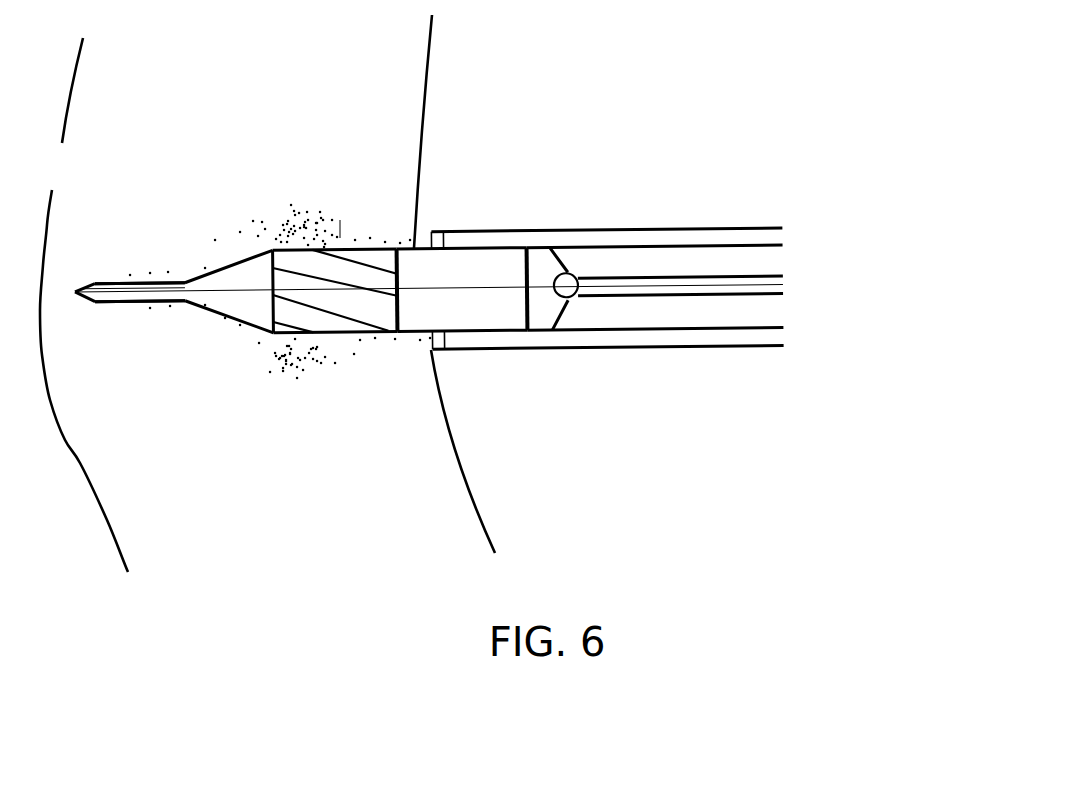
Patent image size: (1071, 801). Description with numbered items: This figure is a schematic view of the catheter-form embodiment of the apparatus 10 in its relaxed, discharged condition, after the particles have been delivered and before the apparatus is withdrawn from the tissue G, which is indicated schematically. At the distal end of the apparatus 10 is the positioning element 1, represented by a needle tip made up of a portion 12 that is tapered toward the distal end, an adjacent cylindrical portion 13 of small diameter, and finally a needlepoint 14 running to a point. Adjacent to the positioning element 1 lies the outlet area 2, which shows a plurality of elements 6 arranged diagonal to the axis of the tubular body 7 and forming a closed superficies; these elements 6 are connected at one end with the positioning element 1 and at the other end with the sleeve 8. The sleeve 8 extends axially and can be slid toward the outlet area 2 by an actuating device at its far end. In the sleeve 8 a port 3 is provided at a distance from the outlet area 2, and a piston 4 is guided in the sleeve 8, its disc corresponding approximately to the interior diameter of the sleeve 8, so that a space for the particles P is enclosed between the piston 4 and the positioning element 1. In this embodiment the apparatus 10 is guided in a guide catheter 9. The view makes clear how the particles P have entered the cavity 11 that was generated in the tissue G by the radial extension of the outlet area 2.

The positioning element 1 is at (158, 322).
The outlet area 2 is at (315, 247).
The port 3 is at (566, 275).
The piston 4 is at (543, 313).
The elements 6 is at (362, 307).
The tubular body 7 is at (468, 358).
The sleeve 8 is at (458, 248).
The guide catheter 9 is at (665, 360).
The apparatus 10 is at (662, 107).
The cavity 11 is at (294, 362).
The tapered portion 12 is at (231, 263).
The cylindrical portion 13 is at (135, 281).
The needlepoint 14 is at (77, 286).
The particles P is at (322, 222).
The tissue G is at (160, 513).